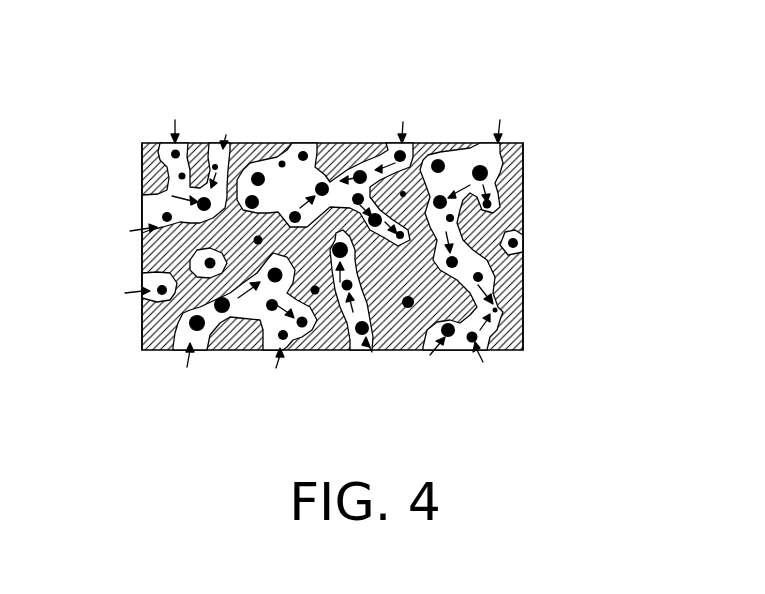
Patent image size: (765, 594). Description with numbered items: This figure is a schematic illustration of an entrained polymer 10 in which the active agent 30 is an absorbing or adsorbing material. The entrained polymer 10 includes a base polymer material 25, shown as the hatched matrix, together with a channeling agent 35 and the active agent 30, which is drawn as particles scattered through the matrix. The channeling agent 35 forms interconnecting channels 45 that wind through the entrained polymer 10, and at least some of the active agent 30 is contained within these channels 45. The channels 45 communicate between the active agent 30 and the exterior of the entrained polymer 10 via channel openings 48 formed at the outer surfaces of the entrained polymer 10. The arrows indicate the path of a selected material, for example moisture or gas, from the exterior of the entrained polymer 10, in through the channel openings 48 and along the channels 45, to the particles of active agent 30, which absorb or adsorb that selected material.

The entrained polymer 10 is at (362, 249).
The base polymer material 25 is at (523, 210).
The active agent 30 is at (452, 148).
The channeling agent 35 is at (335, 152).
The channels 45 is at (142, 196).
The channel openings 48 is at (292, 143).